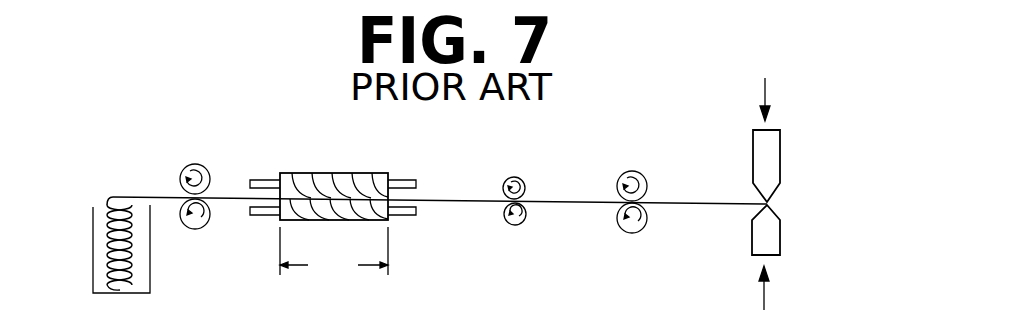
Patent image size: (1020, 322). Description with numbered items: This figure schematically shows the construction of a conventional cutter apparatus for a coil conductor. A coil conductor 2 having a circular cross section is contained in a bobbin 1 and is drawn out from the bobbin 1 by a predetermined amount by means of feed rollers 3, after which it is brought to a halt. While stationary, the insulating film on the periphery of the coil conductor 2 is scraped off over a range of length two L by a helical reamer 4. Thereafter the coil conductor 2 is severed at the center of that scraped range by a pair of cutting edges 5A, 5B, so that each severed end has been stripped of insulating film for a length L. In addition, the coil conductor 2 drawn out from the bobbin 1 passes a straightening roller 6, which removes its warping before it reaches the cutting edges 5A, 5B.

The bobbin 1 is at (153, 265).
The coil conductor 2 is at (128, 193).
The feed rollers 3 is at (187, 163).
The helical reamer 4 is at (328, 172).
The straightening roller 6 is at (513, 176).
The cutting edge 5A is at (780, 160).
The cutting edge 5B is at (780, 232).